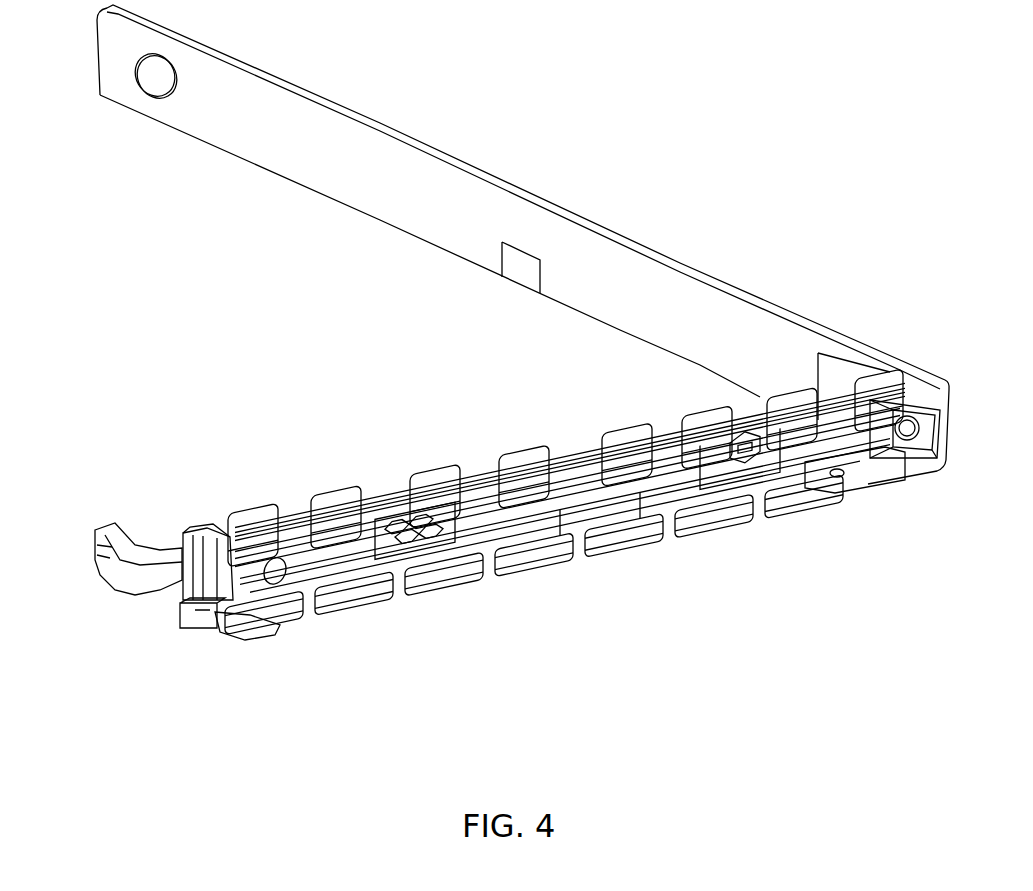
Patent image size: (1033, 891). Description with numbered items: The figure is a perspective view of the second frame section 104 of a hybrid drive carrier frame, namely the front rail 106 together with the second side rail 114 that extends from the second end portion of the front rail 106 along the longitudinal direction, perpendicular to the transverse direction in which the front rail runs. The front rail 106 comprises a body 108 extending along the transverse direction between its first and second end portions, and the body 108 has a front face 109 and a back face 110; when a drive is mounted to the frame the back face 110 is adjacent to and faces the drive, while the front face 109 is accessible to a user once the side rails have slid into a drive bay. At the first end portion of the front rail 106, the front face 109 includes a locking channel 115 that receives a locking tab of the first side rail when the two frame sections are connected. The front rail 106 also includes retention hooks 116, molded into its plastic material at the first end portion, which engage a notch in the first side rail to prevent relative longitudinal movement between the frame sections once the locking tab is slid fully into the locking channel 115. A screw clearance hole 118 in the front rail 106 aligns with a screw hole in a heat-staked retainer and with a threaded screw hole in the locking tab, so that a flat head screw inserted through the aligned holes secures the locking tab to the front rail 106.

The second frame section 104 is at (631, 133).
The front rail 106 is at (563, 562).
The body 108 is at (615, 497).
The front face 109 is at (660, 490).
The back face 110 is at (467, 470).
The second side rail 114 is at (343, 109).
The locking channel 115 is at (315, 623).
The retention hooks 116 is at (207, 613).
The screw clearance hole 118 is at (263, 560).